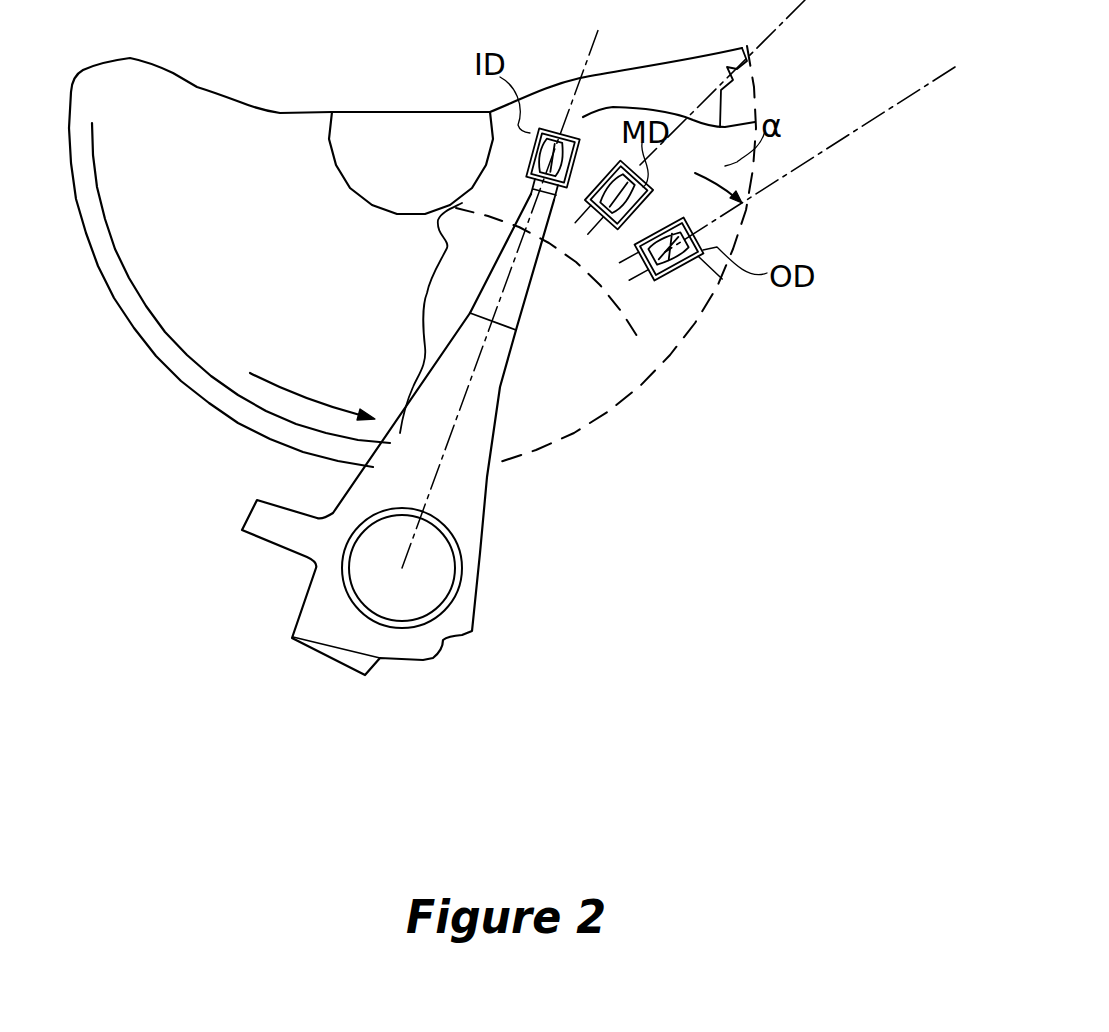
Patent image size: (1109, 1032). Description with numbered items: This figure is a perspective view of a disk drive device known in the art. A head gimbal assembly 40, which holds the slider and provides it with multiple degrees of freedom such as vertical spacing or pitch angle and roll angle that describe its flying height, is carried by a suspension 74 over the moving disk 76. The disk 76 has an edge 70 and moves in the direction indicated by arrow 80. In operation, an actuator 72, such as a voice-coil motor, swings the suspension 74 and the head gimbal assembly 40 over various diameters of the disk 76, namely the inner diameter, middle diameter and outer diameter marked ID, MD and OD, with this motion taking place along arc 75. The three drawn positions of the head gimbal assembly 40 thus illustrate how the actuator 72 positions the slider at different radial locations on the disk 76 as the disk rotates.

The head gimbal assembly 40 is at (587, 117).
The edge 70 is at (167, 372).
The actuator 72 is at (478, 587).
The suspension 74 is at (527, 300).
The arc 75 is at (615, 310).
The disk 76 is at (243, 264).
The arrow 80 is at (317, 403).